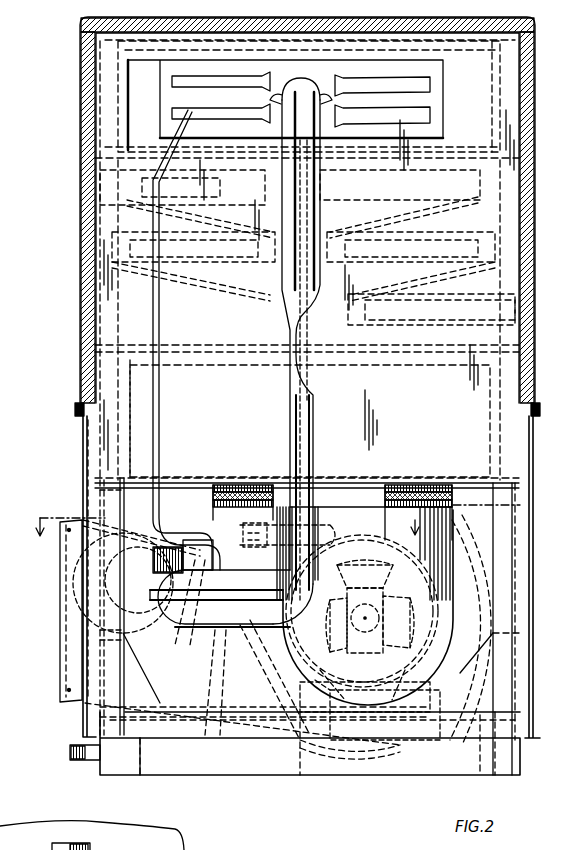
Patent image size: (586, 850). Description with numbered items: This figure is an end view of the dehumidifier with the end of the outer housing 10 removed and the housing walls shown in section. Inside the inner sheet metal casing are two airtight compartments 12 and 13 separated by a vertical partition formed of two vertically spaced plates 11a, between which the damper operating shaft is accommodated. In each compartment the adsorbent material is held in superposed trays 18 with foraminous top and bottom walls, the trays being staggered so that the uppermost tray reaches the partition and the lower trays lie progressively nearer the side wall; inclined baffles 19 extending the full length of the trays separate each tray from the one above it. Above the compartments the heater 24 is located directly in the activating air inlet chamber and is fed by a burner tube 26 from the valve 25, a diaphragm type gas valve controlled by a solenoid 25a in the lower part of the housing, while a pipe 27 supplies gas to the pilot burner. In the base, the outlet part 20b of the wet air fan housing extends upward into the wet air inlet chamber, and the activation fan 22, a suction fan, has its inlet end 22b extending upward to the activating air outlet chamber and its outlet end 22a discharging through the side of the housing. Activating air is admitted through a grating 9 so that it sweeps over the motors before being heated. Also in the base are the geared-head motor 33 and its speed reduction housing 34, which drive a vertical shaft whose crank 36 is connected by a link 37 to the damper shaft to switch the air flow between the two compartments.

The outer housing 10 is at (81, 160).
The heater 24 is at (365, 58).
The trays 18 is at (97, 210).
The baffles 19 is at (105, 262).
The compartment 13 is at (97, 340).
The compartment 12 is at (445, 342).
The vertically spaced plates 11a is at (318, 325).
The burner tube 26 is at (316, 410).
The pipe 27 is at (155, 404).
The outlet part of the fan housing 20b is at (215, 508).
The inlet end of the fan housing 22b is at (456, 495).
The grating 9 is at (82, 506).
The outlet end of the fan housing 22a is at (62, 645).
The solenoid 25a is at (160, 560).
The crank 36 is at (218, 528).
The link 37 is at (262, 532).
The valve 25 is at (212, 632).
The geared-head motor 33 is at (135, 628).
The speed reduction housing 34 is at (216, 650).
The activation fan 22 is at (470, 556).